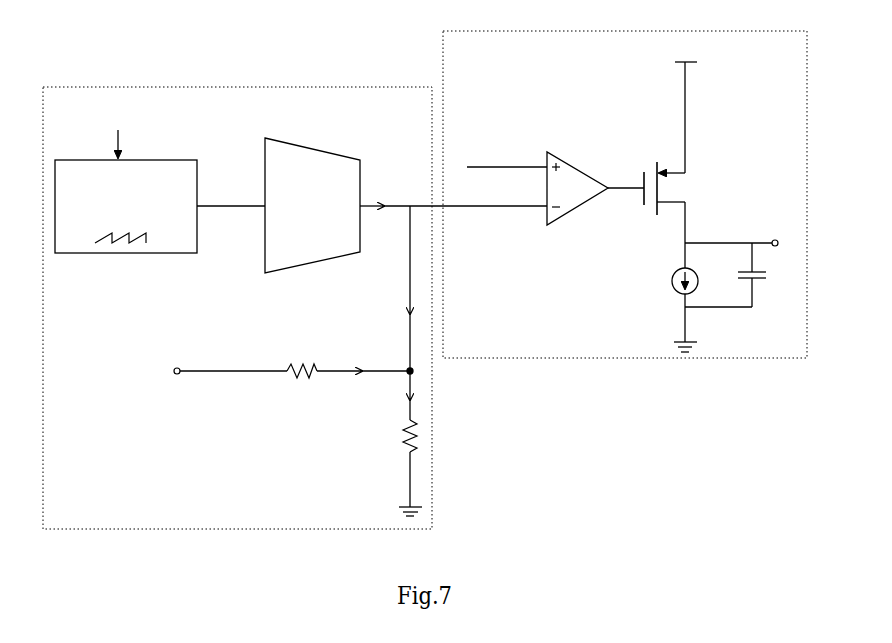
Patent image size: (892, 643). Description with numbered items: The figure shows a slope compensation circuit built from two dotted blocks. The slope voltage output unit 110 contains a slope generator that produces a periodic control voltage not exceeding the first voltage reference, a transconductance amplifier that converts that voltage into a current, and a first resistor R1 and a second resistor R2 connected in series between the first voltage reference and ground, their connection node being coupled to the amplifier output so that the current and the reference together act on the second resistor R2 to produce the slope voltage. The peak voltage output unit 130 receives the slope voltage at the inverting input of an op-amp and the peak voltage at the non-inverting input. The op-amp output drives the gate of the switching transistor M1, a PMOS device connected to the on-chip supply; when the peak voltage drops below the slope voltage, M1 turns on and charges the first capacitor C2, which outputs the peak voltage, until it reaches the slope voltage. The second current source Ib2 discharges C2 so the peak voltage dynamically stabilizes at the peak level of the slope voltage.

The slope voltage output unit 110 is at (288, 87).
The peak voltage output unit 130 is at (618, 32).
The switching transistor M1 is at (688, 188).
The first resistor R1 is at (302, 359).
The second resistor R2 is at (392, 436).
The first capacitor C2 is at (770, 275).
The second current source Ib2 is at (662, 282).